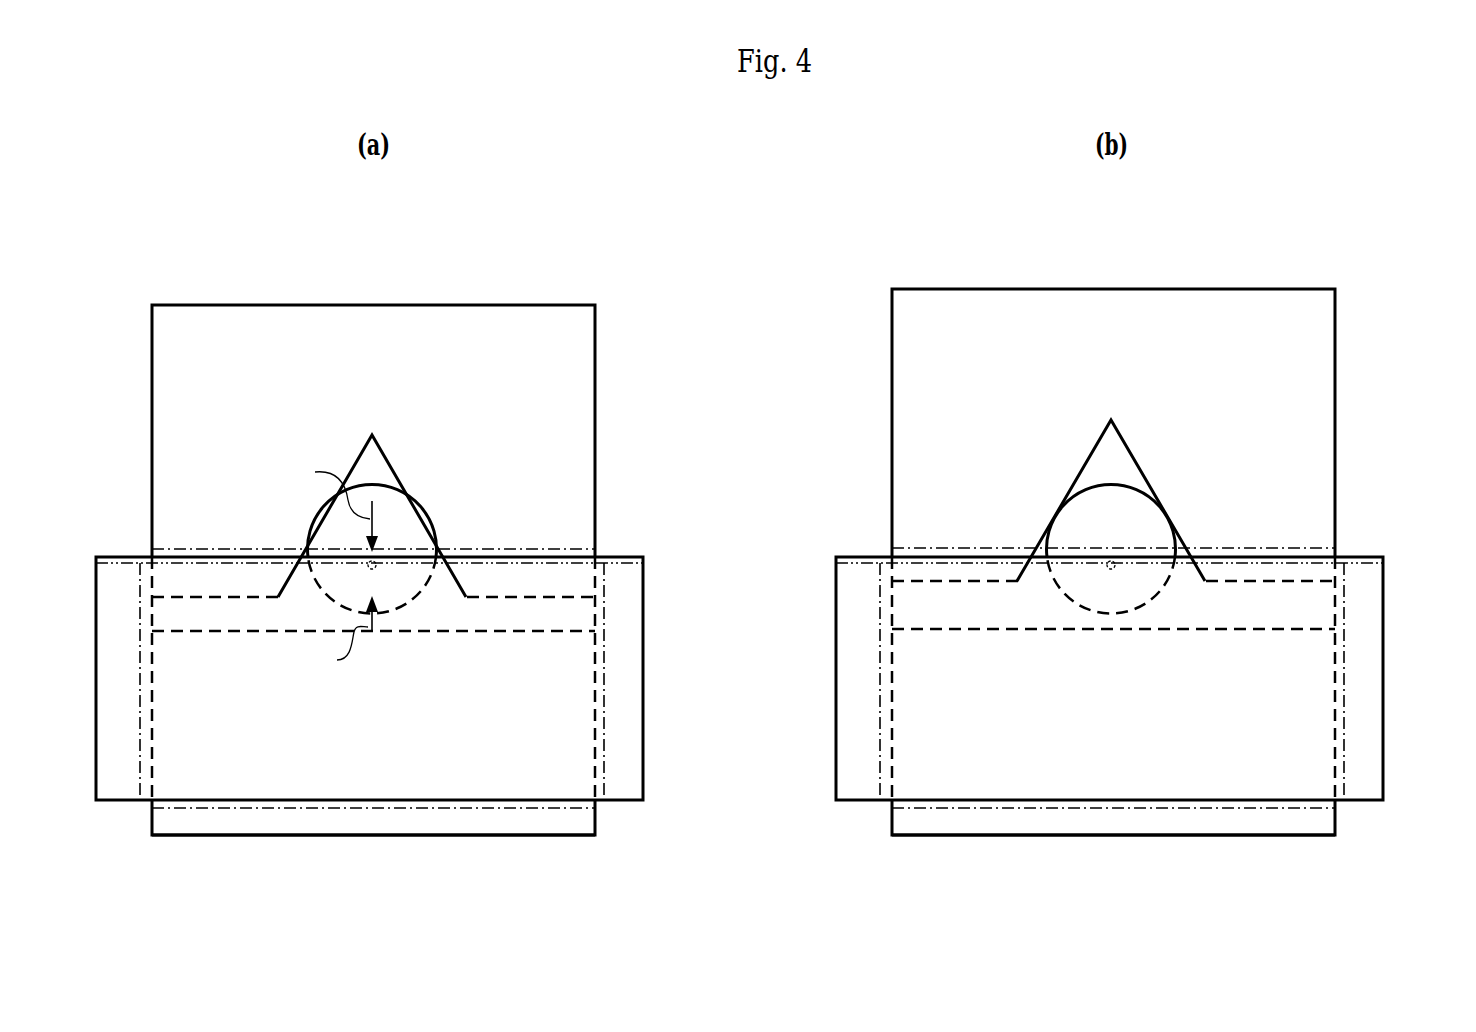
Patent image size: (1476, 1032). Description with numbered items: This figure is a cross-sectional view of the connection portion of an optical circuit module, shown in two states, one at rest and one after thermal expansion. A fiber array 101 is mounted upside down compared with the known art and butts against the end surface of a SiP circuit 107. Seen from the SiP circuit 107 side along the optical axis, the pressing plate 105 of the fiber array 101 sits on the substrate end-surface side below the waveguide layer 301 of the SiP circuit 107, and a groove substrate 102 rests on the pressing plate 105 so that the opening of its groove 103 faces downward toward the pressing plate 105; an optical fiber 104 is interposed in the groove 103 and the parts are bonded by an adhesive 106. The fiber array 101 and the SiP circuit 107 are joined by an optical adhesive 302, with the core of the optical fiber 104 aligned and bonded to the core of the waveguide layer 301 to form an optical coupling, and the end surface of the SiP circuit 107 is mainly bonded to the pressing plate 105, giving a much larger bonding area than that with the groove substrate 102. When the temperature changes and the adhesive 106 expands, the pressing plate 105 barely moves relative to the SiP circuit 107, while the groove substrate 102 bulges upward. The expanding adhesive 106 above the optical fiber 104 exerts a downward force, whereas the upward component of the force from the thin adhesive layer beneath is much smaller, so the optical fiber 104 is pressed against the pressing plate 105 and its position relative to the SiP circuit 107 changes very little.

The fiber array 101 is at (522, 292).
The groove substrate 102 is at (577, 446).
The groove 103 is at (395, 466).
The optical fiber 104 is at (422, 533).
The pressing plate 105 is at (368, 822).
The adhesive 106 is at (508, 631).
The SiP circuit 107 is at (645, 704).
The waveguide layer 301 is at (618, 566).
The optical adhesive 302 is at (603, 645).